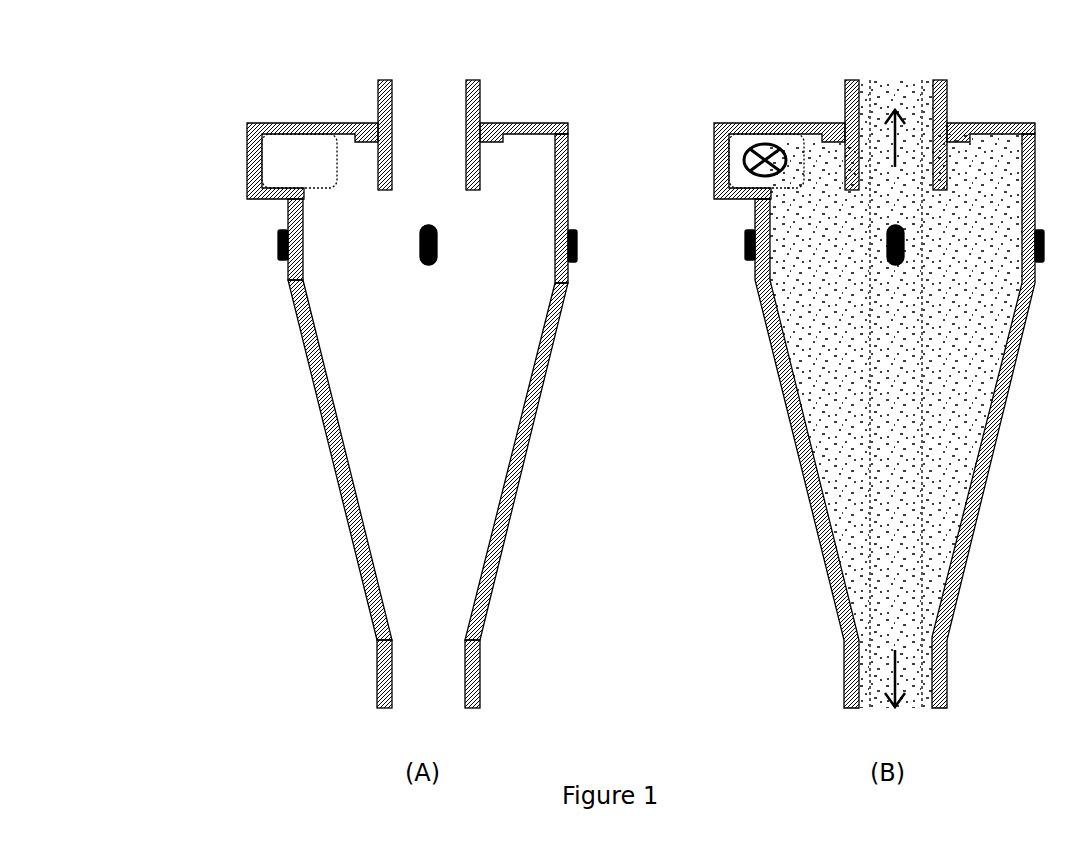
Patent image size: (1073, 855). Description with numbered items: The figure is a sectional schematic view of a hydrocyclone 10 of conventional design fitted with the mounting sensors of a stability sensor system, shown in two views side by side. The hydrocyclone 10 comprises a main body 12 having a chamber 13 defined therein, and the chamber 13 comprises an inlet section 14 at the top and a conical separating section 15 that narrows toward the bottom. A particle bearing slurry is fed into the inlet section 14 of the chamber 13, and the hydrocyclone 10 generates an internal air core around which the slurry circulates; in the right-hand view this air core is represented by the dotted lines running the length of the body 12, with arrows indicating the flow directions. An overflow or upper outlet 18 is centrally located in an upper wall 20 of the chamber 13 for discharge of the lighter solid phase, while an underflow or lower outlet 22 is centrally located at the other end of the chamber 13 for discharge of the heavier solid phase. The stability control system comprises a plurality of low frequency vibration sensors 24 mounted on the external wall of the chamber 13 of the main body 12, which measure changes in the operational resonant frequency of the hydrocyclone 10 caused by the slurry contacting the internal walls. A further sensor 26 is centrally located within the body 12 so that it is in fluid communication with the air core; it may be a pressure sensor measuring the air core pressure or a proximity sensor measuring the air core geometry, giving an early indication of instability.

The hydrocyclone 10 is at (315, 92).
The main body 12 is at (240, 162).
The chamber 13 is at (568, 160).
The inlet section 14 is at (299, 161).
The conical separating section 15 is at (532, 440).
The upper outlet 18 is at (429, 135).
The upper wall 20 is at (533, 127).
The lower outlet 22 is at (428, 674).
The low frequency vibration sensors 24 is at (277, 245).
The sensor 26 is at (438, 240).